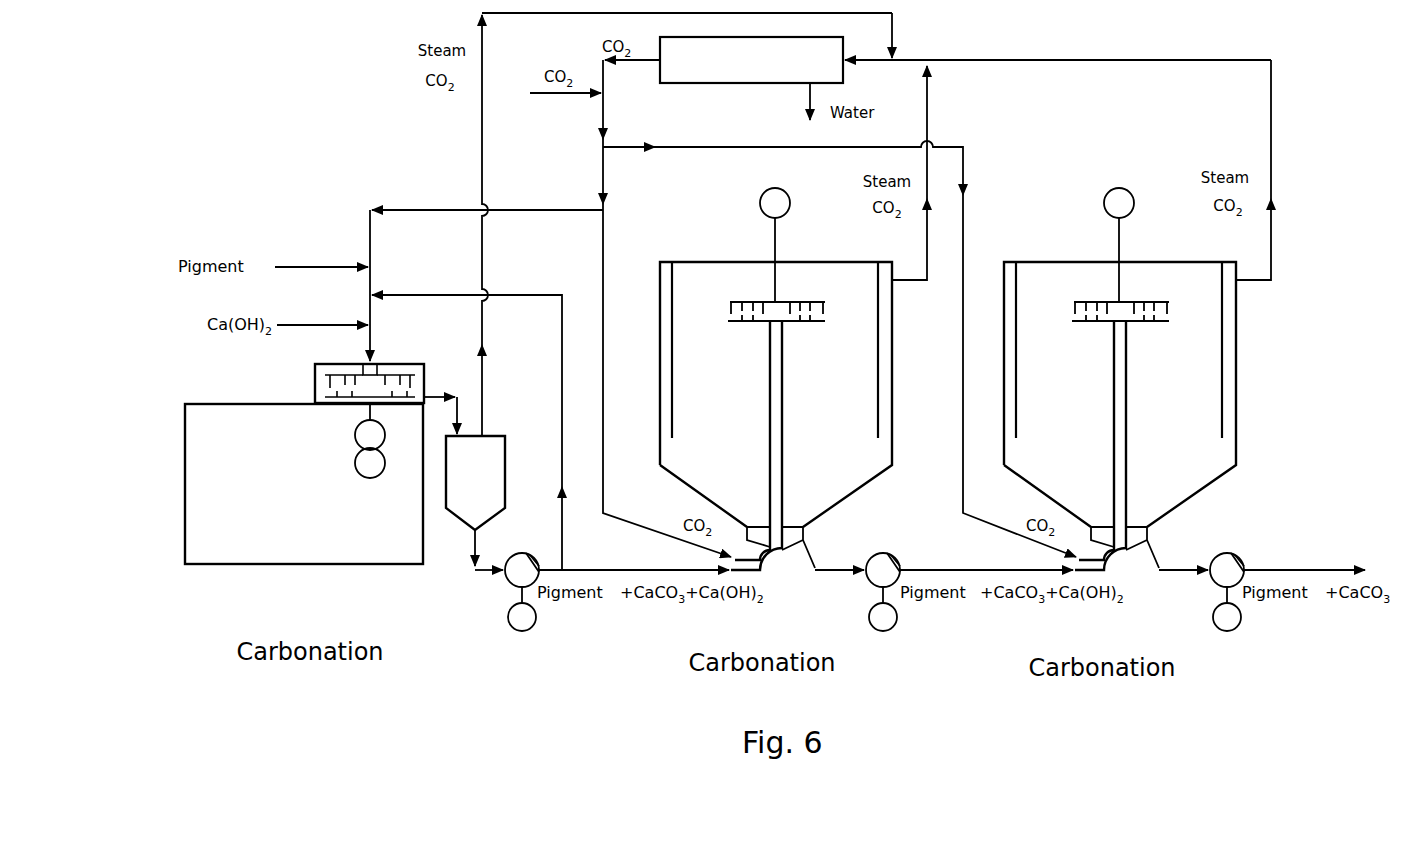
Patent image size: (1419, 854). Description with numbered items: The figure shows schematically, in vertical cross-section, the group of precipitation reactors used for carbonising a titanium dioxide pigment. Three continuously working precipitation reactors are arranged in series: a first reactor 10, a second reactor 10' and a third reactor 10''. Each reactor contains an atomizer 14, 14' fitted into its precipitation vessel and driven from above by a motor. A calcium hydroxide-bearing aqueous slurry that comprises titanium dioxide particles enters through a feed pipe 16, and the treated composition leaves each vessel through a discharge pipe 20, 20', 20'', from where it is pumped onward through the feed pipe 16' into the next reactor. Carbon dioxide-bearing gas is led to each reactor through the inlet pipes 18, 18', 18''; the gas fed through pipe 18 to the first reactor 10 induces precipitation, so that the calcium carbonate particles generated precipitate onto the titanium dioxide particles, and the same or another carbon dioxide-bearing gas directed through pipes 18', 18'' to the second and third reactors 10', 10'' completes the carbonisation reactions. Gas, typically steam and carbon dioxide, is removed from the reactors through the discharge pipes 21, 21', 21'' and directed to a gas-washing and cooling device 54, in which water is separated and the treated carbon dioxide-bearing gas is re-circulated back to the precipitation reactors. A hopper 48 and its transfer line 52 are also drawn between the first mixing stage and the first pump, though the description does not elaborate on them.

The precipitation reactor 10 is at (317, 436).
The second precipitation reactor 10' is at (767, 378).
The third precipitation reactor 10'' is at (1112, 378).
The atomizer 14 is at (797, 339).
The atomizer 14' is at (1143, 339).
The feed pipe 16 is at (577, 432).
The feed pipe 16' is at (1013, 445).
The inlet pipe 18 is at (487, 186).
The inlet pipe 18' is at (651, 308).
The inlet pipe 18'' is at (839, 349).
The discharge pipe 20 is at (507, 580).
The discharge pipe 20' is at (857, 578).
The discharge pipe 20'' is at (1262, 577).
The discharge pipe 21 is at (687, 224).
The discharge pipe 21' is at (922, 201).
The discharge pipe 21'' is at (1268, 198).
The hopper / cyclone 48 is at (475, 501).
The transfer line to hopper 52 is at (497, 426).
The gas-washing and cooling device 54 is at (938, 78).